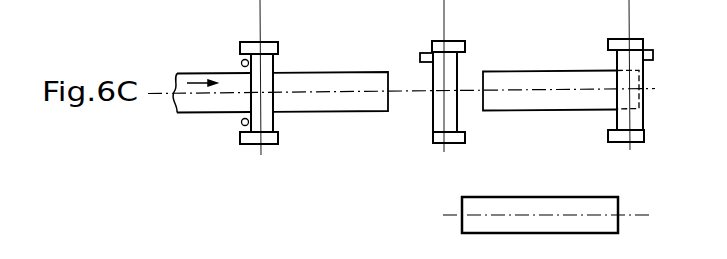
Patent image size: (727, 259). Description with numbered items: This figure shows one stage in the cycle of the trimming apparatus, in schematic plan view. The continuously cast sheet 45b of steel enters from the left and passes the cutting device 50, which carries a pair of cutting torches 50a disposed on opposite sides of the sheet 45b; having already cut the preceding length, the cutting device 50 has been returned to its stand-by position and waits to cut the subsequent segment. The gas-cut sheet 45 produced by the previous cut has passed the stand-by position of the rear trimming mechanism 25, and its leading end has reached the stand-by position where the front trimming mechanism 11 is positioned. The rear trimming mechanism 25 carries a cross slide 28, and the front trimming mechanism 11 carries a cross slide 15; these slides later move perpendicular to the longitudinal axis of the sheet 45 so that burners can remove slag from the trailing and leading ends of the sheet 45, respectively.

The front trimming mechanism 11 is at (641, 118).
The cross slide 15 is at (654, 53).
The rear trimming mechanism 25 is at (458, 118).
The cross slide 28 is at (422, 55).
The sheet 45 is at (552, 71).
The sheet of steel 45b is at (178, 74).
The cutting device 50 is at (275, 118).
The cutting torches 50a is at (242, 61).